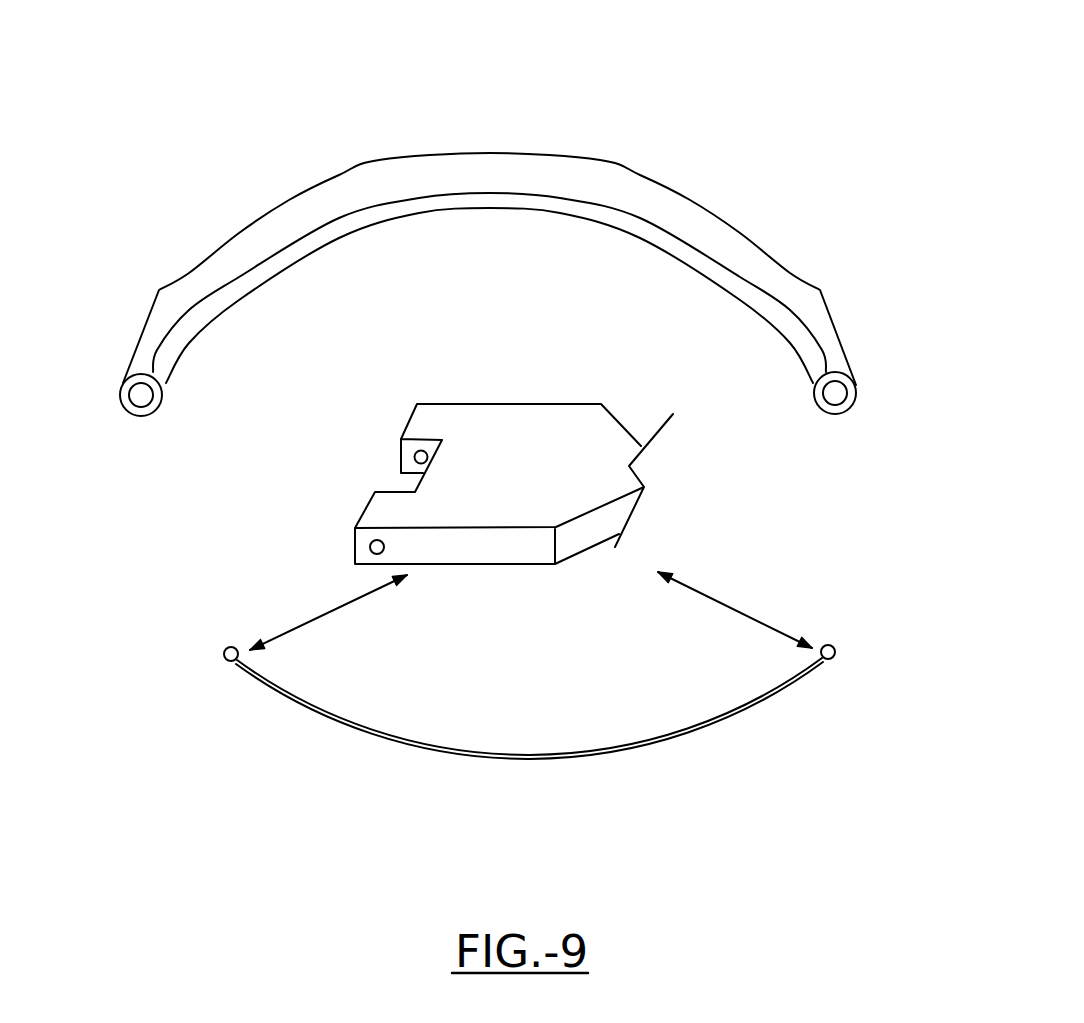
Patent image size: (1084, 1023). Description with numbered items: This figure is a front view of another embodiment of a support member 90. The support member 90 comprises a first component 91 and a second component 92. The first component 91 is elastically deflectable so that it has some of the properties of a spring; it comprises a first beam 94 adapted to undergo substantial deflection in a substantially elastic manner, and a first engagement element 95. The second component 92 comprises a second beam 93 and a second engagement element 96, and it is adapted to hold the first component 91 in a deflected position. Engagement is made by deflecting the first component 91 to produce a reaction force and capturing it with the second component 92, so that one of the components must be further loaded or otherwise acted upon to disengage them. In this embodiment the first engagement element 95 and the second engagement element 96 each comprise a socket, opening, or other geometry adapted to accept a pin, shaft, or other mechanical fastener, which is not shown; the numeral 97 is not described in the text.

The support member 90 is at (238, 500).
The first component 91 is at (487, 227).
The second component 92 is at (671, 745).
The second beam 93 is at (410, 740).
The first beam 94 is at (290, 222).
The first engagement element 95 is at (825, 352).
The second engagement element 96 is at (836, 667).
The left end ring 97 is at (148, 352).